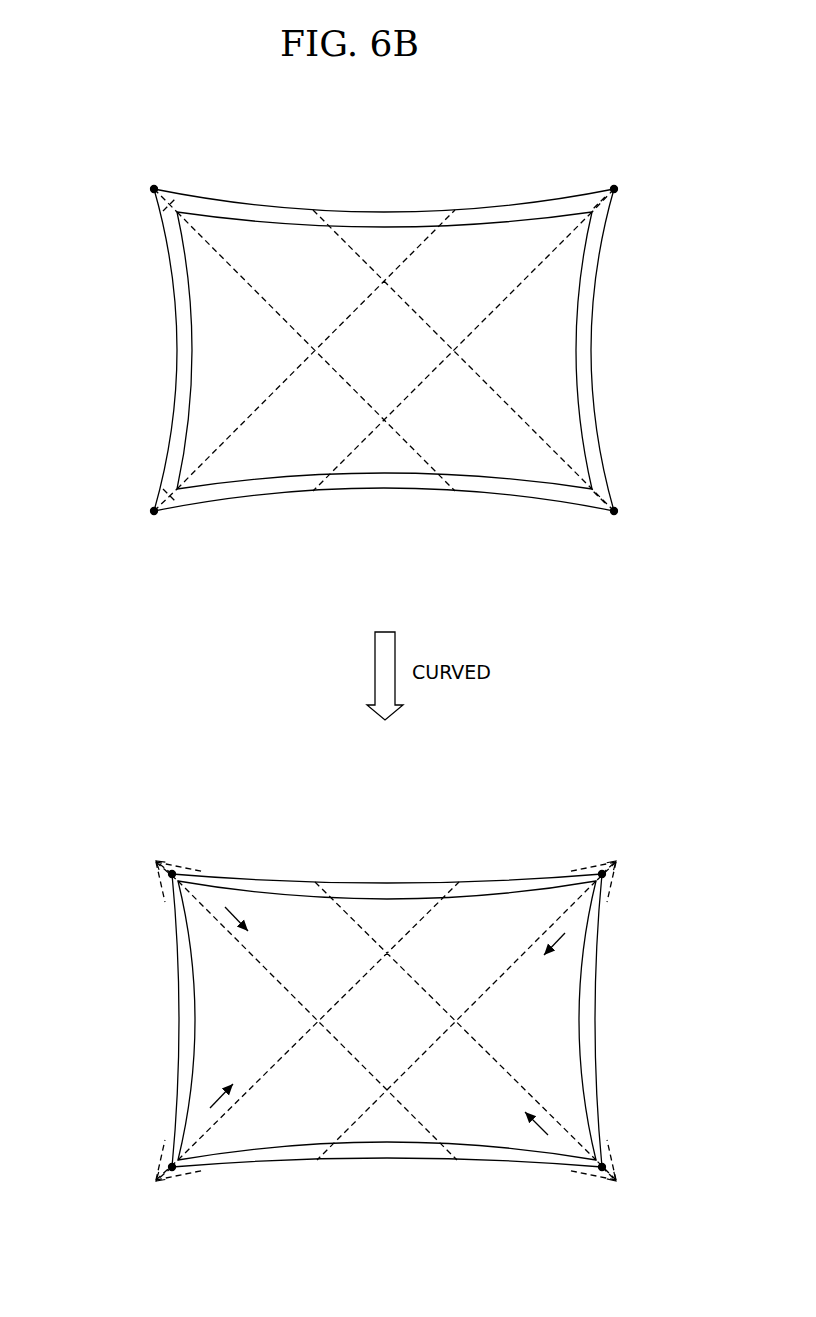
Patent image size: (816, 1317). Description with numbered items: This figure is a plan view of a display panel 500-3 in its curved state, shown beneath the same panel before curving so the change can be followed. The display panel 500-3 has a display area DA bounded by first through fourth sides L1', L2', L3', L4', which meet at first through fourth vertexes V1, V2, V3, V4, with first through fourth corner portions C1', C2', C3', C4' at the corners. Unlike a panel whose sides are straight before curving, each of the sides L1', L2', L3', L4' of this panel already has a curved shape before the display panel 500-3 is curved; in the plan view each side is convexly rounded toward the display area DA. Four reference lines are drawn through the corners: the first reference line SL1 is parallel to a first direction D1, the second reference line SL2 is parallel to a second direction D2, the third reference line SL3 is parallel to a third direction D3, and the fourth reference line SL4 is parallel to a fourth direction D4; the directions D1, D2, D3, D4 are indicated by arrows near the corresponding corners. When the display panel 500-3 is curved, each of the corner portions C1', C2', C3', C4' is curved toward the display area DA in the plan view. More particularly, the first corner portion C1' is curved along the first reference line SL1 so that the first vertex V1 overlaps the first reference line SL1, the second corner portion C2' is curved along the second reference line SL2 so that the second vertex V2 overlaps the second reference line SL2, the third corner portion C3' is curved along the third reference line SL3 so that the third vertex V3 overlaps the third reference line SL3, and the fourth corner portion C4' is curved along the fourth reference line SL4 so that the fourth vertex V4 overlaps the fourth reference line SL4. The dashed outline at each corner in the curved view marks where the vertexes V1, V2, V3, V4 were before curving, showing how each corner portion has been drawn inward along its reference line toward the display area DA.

The display panel 500-3 is at (662, 120).
The display area DA is at (578, 313).
The first side L1' is at (384, 500).
The second side L2' is at (641, 678).
The third side L3' is at (384, 871).
The fourth side L4' is at (128, 678).
The first vertex V1 is at (154, 189).
The second vertex V2 is at (614, 189).
The third vertex V3 is at (614, 511).
The fourth vertex V4 is at (154, 511).
The first corner portion C1' is at (124, 553).
The second corner portion C2' is at (643, 553).
The third corner portion C3' is at (643, 822).
The fourth corner portion C4' is at (124, 822).
The first reference line SL1 is at (197, 230).
The second reference line SL2 is at (572, 230).
The third reference line SL3 is at (573, 470).
The fourth reference line SL4 is at (197, 470).
The first direction D1 is at (243, 914).
The second direction D2 is at (564, 951).
The third direction D3 is at (530, 1129).
The fourth direction D4 is at (217, 1089).